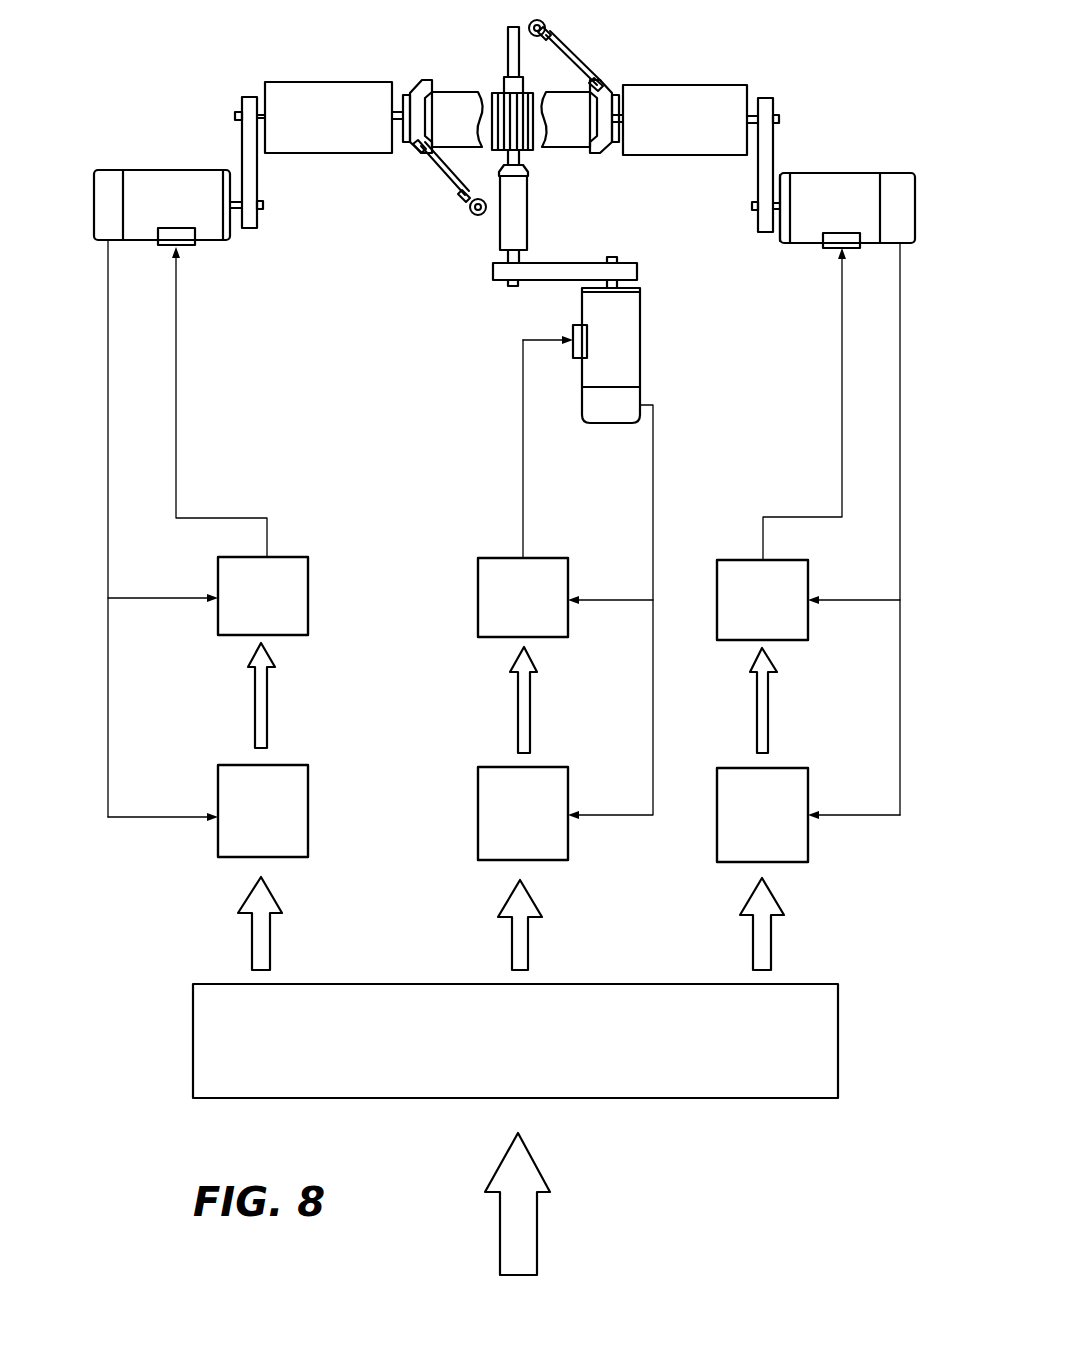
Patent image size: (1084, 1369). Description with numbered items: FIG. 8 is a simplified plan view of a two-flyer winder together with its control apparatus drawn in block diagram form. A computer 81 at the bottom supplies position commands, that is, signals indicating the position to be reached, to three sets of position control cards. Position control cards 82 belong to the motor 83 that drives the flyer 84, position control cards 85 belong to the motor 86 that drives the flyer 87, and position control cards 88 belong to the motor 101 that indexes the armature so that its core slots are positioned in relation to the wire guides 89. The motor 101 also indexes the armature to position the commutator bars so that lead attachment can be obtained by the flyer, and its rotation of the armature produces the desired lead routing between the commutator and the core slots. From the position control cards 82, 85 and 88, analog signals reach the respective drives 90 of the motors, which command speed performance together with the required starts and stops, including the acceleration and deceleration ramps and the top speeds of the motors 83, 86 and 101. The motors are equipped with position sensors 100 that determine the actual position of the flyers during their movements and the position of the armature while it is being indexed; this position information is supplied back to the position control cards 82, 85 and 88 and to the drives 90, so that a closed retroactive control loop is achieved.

The computer 81 is at (741, 1100).
The position control cards 82 is at (307, 768).
The motor 83 is at (204, 238).
The flyer 84 is at (446, 182).
The position control cards 85 is at (805, 775).
The motor 86 is at (818, 183).
The flyer 87 is at (578, 63).
The position control cards 88 is at (503, 772).
The wire guides 89 is at (463, 92).
The drives 90 is at (302, 580).
The position sensors 100 is at (110, 176).
The motor 101 is at (633, 345).